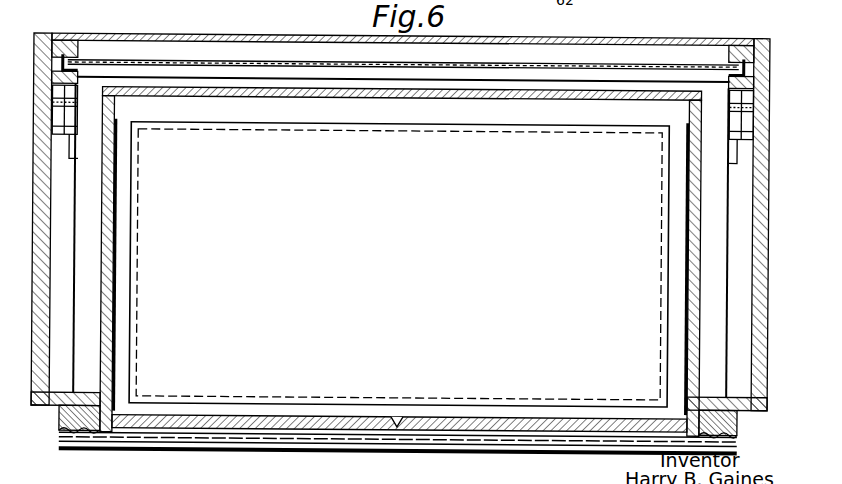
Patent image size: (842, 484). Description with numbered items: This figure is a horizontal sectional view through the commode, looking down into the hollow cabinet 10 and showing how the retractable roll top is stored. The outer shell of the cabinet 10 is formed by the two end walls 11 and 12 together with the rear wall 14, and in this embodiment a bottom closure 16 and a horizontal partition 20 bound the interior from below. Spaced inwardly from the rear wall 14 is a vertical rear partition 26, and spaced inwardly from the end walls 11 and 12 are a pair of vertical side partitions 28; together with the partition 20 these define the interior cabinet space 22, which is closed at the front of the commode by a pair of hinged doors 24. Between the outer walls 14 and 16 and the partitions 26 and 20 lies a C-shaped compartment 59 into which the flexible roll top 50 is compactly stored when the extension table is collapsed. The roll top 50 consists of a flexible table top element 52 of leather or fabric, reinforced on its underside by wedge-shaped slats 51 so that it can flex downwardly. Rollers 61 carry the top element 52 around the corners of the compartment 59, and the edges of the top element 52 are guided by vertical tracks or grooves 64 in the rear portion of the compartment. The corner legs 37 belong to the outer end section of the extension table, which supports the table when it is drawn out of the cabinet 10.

The cabinet 10 is at (769, 265).
The end wall 11 is at (35, 232).
The end wall 12 is at (761, 213).
The rear wall 14 is at (509, 37).
The bottom closure 16 is at (600, 52).
The horizontal partition 20 is at (250, 385).
The interior cabinet space 22 is at (458, 385).
The hinged doors 24 is at (408, 428).
The vertical rear partition 26 is at (325, 96).
The vertical side partitions 28 is at (118, 247).
The corner legs 37 is at (63, 425).
The flexible roll top 50 is at (277, 56).
The slats 51 is at (688, 70).
The flexible table top element 52 is at (653, 63).
The C-shaped compartment 59 is at (183, 47).
The rollers 61 is at (79, 150).
The vertical tracks or grooves 64 is at (84, 63).